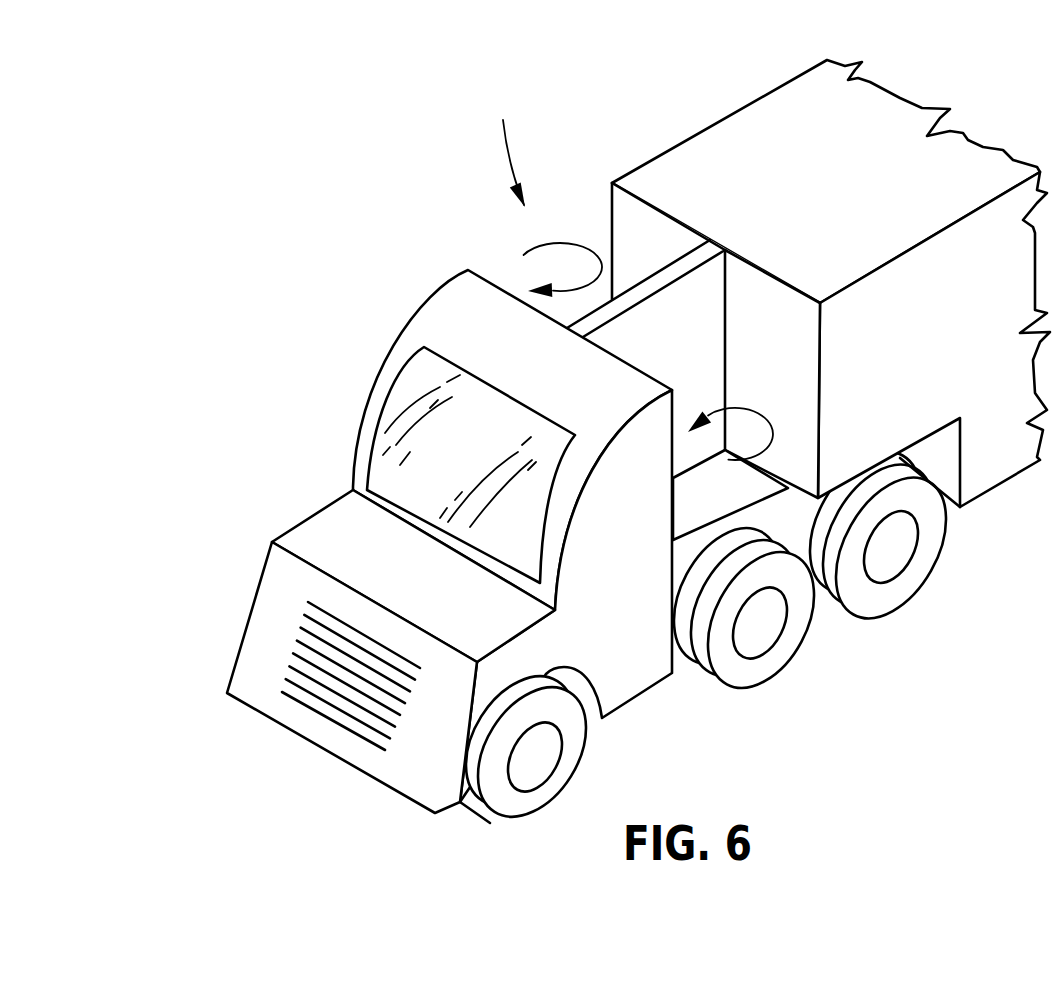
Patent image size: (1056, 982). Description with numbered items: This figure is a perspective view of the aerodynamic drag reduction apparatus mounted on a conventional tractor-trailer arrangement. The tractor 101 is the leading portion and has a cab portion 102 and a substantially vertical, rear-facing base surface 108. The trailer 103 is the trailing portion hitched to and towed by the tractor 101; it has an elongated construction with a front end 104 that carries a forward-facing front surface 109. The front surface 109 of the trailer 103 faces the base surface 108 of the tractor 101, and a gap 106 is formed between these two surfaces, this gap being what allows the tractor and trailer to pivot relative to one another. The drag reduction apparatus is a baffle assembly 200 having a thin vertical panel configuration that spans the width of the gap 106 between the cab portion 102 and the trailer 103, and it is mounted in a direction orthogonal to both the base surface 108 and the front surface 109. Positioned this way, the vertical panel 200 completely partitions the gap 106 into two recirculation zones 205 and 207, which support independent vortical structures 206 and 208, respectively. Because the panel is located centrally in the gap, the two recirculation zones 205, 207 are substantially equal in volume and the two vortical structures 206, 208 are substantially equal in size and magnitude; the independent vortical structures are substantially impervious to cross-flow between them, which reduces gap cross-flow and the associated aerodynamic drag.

The tractor 101 is at (306, 726).
The cab portion 102 is at (558, 363).
The trailer 103 is at (1008, 372).
The front end 104 is at (848, 127).
The gap 106 is at (505, 149).
The base surface 108 is at (748, 502).
The front surface 109 is at (787, 303).
The baffle assembly 200 is at (695, 345).
The recirculation zone 205 is at (673, 256).
The vortical structure 206 is at (567, 242).
The recirculation zone 207 is at (793, 376).
The vortical structure 208 is at (773, 432).